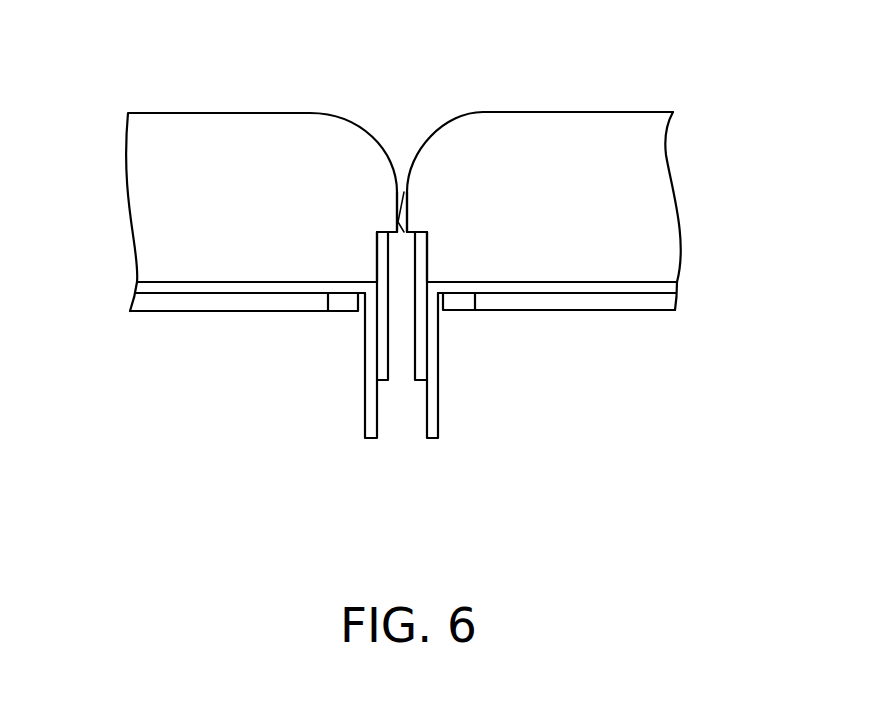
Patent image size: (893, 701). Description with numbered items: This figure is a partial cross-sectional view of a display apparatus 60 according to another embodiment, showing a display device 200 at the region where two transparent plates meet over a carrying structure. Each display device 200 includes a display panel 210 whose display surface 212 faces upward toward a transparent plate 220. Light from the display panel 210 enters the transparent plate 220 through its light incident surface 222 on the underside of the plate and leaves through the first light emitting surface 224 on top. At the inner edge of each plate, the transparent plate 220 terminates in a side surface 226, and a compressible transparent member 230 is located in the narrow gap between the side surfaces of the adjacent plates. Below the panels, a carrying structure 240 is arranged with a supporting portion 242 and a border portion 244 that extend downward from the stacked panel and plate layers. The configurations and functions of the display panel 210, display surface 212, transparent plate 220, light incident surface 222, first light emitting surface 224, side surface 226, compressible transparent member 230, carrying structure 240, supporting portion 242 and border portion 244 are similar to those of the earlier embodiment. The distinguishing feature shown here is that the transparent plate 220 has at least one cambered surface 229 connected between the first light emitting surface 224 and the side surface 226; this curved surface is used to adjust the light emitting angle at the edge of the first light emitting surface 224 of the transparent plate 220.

The display apparatus 60 is at (757, 550).
The display device 200 is at (106, 194).
The transparent plate 220 is at (642, 150).
The first light emitting surface 224 is at (570, 112).
The cambered surface 229 is at (437, 130).
The compressible transparent member 230 is at (400, 192).
The side surface 226 is at (411, 208).
The light incident surface 222 is at (648, 286).
The display panel 210 is at (563, 303).
The display surface 212 is at (622, 297).
The carrying structure 240 is at (490, 505).
The supporting portion 242 is at (421, 378).
The border portion 244 is at (432, 425).